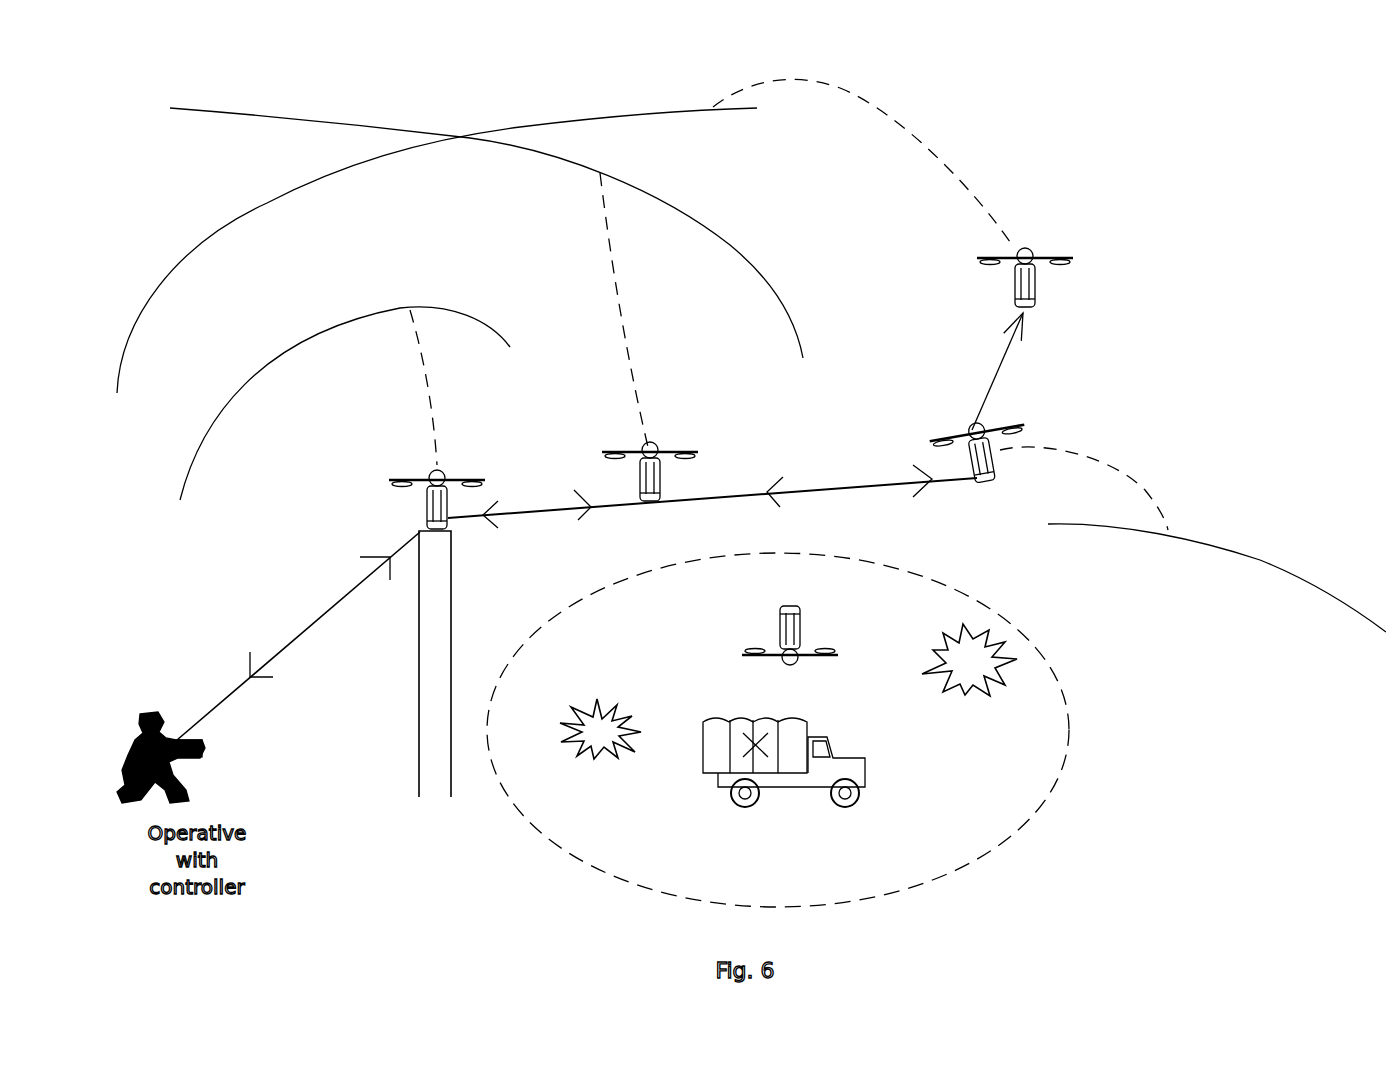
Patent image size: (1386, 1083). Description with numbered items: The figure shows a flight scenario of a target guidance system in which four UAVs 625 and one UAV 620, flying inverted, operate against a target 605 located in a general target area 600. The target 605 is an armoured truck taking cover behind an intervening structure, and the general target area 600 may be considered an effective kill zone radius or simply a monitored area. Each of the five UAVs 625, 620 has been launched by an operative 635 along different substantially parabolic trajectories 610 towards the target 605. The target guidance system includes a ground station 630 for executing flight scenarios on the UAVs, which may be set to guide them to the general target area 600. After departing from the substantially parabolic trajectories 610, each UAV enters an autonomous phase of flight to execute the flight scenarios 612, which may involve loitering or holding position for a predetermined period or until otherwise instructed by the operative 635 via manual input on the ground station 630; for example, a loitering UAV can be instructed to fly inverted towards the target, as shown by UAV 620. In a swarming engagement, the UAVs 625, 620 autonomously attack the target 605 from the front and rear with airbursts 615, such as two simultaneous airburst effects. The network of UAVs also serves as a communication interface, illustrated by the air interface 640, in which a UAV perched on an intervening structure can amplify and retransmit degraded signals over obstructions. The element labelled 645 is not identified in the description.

The general target area 600 is at (997, 794).
The target 605 is at (763, 758).
The substantially parabolic trajectories 610 is at (548, 122).
The flight scenarios 612 is at (433, 389).
The airbursts 615 is at (592, 738).
The UAV flying inverted 620 is at (790, 637).
The UAVs 625 is at (430, 503).
The ground station 630 is at (200, 752).
The operative 635 is at (150, 712).
The air interface 640 is at (535, 513).
The launch tower 645 is at (436, 617).